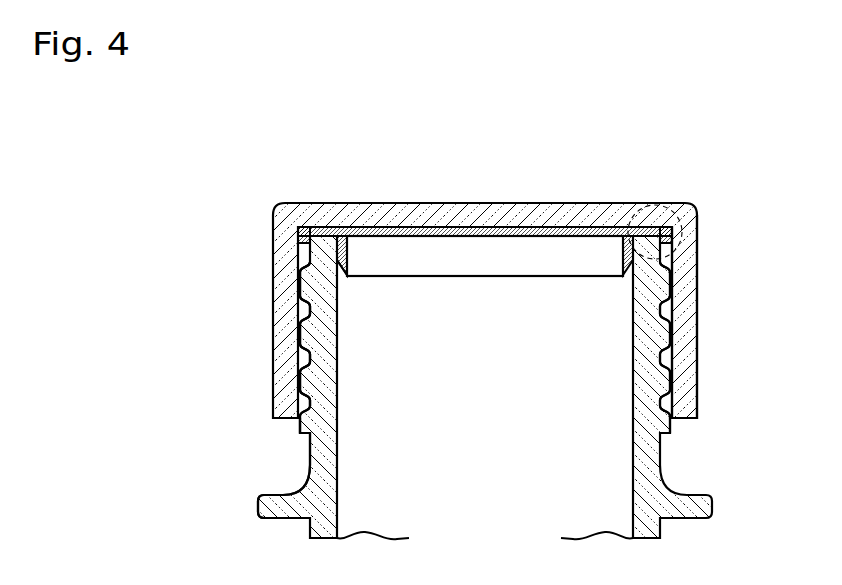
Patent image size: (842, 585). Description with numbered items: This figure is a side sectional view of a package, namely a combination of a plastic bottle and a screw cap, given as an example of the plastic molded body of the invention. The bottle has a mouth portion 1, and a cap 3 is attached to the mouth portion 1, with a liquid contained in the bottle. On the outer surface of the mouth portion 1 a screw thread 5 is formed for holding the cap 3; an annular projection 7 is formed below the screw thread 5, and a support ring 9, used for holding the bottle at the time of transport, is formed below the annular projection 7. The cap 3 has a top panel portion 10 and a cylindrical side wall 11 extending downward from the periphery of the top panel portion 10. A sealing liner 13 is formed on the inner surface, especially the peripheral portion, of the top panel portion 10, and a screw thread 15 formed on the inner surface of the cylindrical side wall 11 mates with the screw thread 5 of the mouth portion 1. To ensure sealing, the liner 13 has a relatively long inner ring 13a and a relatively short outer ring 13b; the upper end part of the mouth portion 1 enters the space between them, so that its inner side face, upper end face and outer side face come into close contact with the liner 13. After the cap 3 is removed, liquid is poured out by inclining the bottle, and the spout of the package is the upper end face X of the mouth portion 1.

The mouth portion 1 is at (337, 480).
The cap 3 is at (235, 280).
The screw thread 5 is at (299, 329).
The annular projection 7 is at (301, 437).
The support ring 9 is at (262, 508).
The top panel portion 10 is at (478, 212).
The cylindrical side wall 11 is at (690, 336).
The sealing liner 13 is at (392, 243).
The inner ring 13a is at (348, 262).
The outer ring 13b is at (298, 238).
The screw thread 15 is at (311, 293).
The upper end face X is at (625, 221).